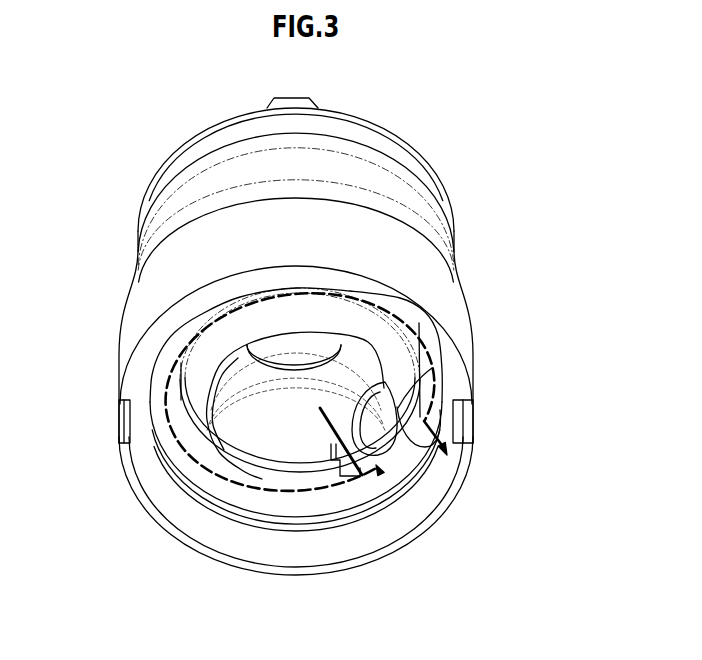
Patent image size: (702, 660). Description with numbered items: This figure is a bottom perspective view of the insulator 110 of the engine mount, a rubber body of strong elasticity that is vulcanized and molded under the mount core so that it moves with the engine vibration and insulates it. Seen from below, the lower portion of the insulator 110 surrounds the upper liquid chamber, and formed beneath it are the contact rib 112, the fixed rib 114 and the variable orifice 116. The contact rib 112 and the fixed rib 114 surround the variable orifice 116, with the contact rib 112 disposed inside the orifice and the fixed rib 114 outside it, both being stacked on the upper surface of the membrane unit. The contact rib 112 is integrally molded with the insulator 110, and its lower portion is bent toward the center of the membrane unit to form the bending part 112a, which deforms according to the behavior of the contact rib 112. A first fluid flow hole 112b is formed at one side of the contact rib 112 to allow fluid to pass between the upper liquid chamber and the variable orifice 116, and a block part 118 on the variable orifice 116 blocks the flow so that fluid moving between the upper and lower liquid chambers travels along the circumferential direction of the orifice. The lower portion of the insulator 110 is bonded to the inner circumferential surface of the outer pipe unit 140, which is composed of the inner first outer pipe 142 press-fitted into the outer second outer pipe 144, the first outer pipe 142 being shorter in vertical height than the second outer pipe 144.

The insulator 110 is at (441, 158).
The contact rib 112 is at (285, 447).
The bending part 112a is at (307, 478).
The first fluid flow hole 112b is at (322, 406).
The fixed rib 114 is at (217, 498).
The variable orifice 116 is at (381, 474).
The block part 118 is at (411, 452).
The outer pipe unit 140 is at (103, 582).
The first outer pipe 142 is at (176, 482).
The second outer pipe 144 is at (128, 478).